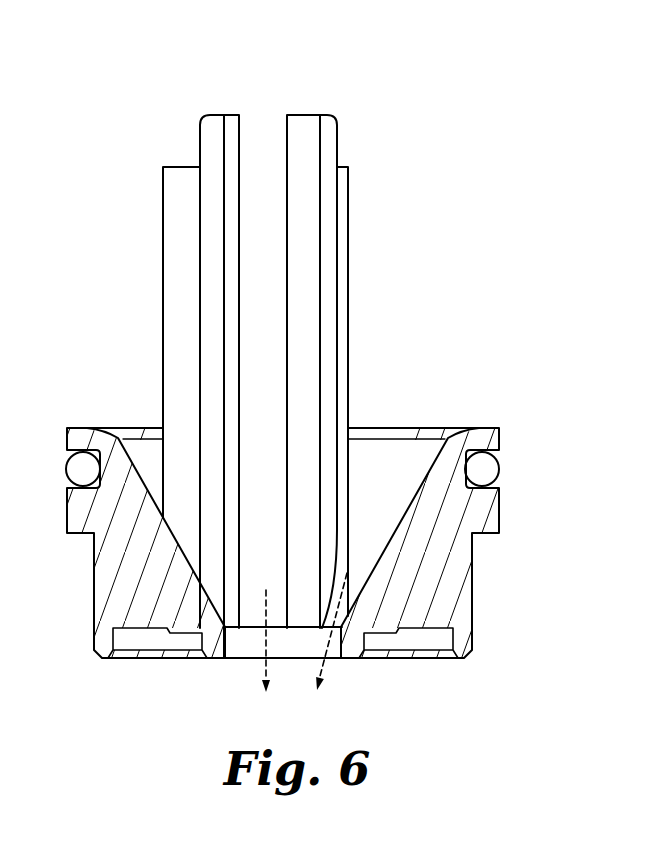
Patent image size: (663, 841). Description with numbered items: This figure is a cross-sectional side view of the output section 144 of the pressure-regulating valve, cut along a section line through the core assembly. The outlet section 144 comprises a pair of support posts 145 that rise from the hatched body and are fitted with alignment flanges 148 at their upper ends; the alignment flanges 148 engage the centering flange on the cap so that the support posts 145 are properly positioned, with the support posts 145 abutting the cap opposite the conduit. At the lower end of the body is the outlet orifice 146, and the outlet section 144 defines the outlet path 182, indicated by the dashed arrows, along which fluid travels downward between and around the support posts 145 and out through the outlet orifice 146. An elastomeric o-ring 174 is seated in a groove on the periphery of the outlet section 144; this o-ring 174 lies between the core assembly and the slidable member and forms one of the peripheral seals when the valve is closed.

The output section 144 is at (155, 90).
The support posts 145 is at (177, 249).
The outlet orifice 146 is at (237, 648).
The alignment flanges 148 is at (215, 121).
The elastomeric o-ring 174 is at (490, 466).
The outlet path 182 is at (270, 665).